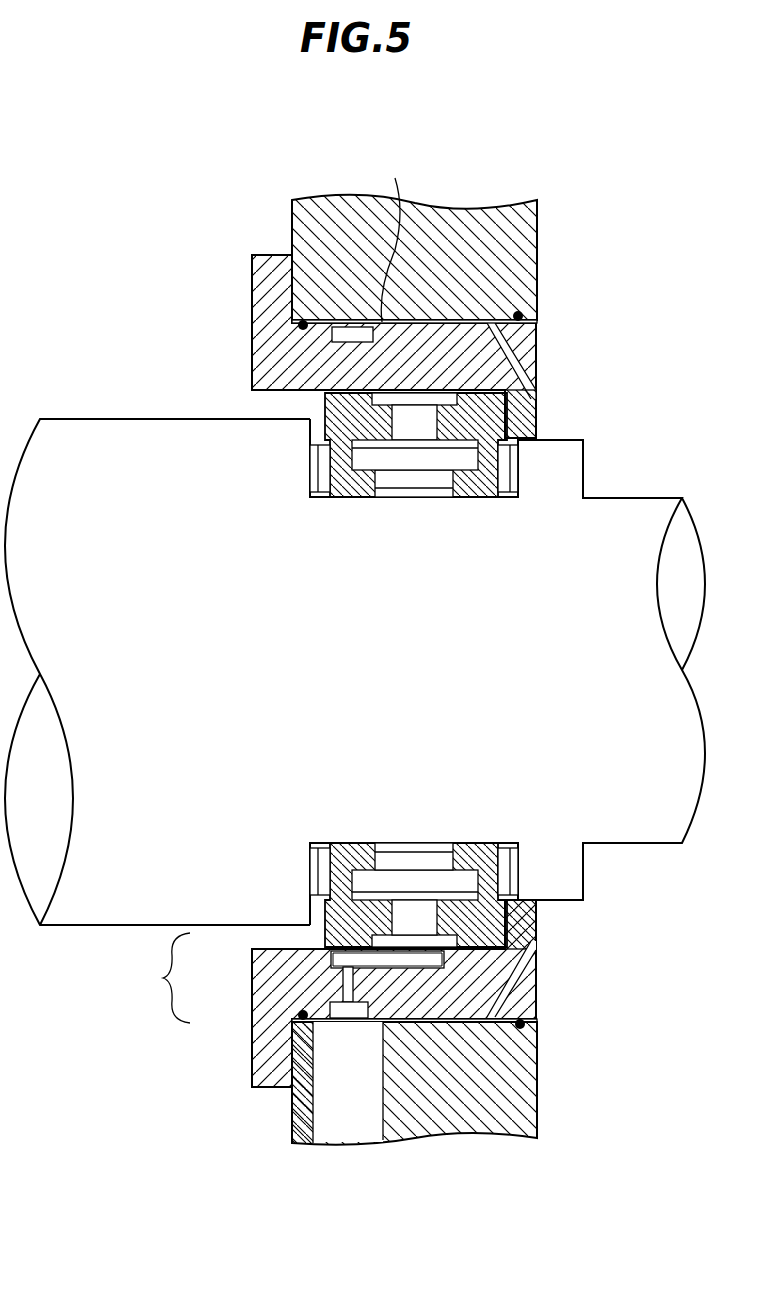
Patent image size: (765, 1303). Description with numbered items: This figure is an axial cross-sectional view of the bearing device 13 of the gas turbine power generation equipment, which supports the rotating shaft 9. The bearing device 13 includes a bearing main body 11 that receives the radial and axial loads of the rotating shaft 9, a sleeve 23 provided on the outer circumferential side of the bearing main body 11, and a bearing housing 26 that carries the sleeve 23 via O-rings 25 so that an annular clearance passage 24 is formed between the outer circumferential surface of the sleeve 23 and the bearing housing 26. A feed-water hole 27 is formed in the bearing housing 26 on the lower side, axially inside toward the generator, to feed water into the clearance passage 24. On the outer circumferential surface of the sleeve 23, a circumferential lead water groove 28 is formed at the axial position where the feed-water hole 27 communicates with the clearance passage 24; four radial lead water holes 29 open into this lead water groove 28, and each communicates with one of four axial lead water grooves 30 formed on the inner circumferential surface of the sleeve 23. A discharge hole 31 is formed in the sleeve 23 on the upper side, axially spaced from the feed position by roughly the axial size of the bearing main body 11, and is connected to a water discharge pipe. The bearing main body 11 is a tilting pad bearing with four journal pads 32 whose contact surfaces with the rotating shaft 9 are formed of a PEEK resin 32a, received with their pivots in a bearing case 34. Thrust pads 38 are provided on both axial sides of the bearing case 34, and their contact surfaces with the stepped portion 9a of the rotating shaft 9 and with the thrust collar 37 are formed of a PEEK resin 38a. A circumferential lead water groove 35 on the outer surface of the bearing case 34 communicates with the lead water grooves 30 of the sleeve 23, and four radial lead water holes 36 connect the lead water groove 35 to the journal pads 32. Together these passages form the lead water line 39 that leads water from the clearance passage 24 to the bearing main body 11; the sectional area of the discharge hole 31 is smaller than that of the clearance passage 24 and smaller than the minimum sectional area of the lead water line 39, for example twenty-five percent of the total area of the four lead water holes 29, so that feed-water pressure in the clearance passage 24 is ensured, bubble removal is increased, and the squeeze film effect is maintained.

The rotating shaft 9 is at (408, 670).
The stepped portion 9a is at (320, 467).
The bearing main body 11 is at (320, 415).
The bearing device 13 is at (580, 230).
The sleeve 23 is at (250, 318).
The clearance passage 24 is at (394, 238).
The O-rings 25 is at (519, 315).
The bearing housing 26 is at (290, 225).
The feed-water hole 27 is at (327, 1113).
The lead water groove 28 is at (340, 1010).
The radial lead water holes 29 is at (347, 985).
The axial lead water grooves 30 is at (340, 957).
The discharge hole 31 is at (507, 348).
The journal pads 32 is at (425, 482).
The PEEK resin 32a is at (393, 492).
The bearing case 34 is at (490, 420).
The lead water groove 35 is at (447, 945).
The radial lead water holes 36 is at (423, 918).
The thrust collar 37 is at (567, 467).
The thrust pads 38 is at (507, 485).
The PEEK resin 38a is at (513, 467).
The lead water line 39 is at (156, 978).